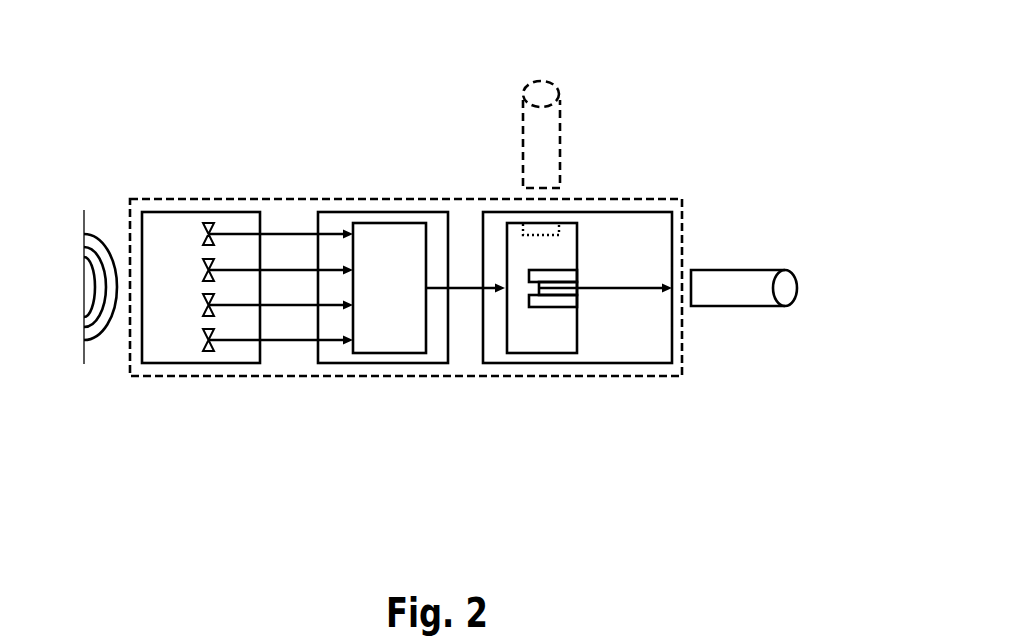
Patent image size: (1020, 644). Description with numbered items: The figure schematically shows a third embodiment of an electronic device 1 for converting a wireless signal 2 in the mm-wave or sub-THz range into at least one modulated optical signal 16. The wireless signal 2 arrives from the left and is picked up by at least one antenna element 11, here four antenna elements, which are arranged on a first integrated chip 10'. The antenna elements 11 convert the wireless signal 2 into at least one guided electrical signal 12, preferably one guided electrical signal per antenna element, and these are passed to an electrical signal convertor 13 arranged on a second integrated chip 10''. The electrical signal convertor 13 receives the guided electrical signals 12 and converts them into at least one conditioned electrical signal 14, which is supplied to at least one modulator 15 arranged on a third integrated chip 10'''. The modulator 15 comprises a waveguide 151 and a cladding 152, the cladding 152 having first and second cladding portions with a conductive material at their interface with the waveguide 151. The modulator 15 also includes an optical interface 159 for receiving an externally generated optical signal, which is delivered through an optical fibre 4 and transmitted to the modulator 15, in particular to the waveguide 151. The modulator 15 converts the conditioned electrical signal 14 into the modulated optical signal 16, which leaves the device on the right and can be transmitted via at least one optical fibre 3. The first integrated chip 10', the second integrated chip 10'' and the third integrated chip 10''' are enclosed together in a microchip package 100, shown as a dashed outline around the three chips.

The electronic device 1 is at (171, 541).
The wireless signal 2 is at (83, 342).
The optical fibre 3 is at (750, 308).
The optical fibre for receiving an externally generated optical signal 4 is at (548, 92).
The first integrated chip 10' is at (175, 297).
The second integrated chip 10'' is at (357, 296).
The third integrated chip 10''' is at (551, 338).
The antenna element 11 is at (190, 342).
The guided electrical signal 12 is at (286, 347).
The electrical signal convertor 13 is at (413, 340).
The conditioned electrical signal 14 is at (472, 288).
The modulator 15 is at (563, 342).
The modulated optical signal 16 is at (635, 290).
The microchip package 100 is at (672, 198).
The waveguide 151 is at (555, 288).
The cladding 152 is at (529, 276).
The optical interface 159 is at (556, 225).